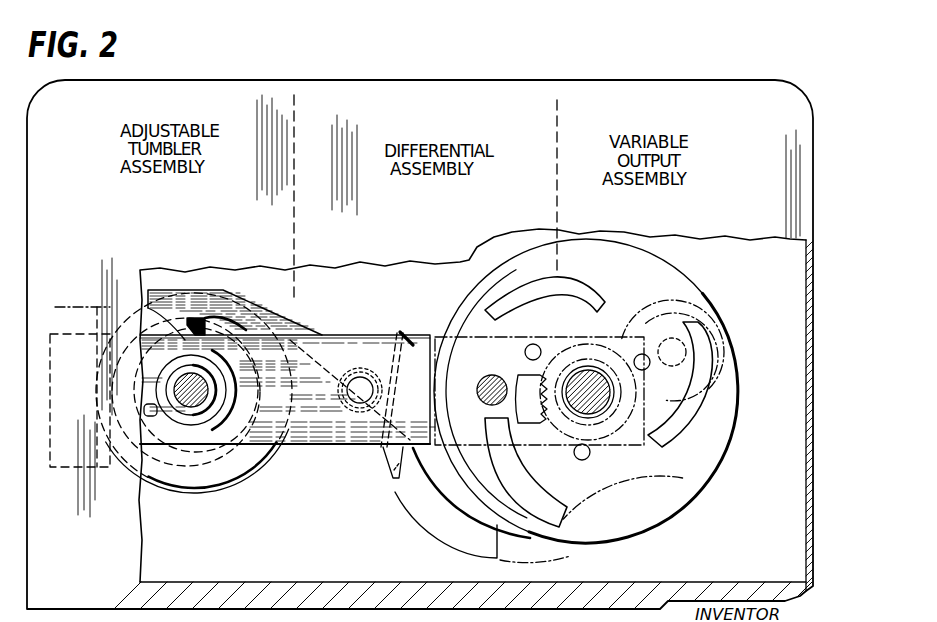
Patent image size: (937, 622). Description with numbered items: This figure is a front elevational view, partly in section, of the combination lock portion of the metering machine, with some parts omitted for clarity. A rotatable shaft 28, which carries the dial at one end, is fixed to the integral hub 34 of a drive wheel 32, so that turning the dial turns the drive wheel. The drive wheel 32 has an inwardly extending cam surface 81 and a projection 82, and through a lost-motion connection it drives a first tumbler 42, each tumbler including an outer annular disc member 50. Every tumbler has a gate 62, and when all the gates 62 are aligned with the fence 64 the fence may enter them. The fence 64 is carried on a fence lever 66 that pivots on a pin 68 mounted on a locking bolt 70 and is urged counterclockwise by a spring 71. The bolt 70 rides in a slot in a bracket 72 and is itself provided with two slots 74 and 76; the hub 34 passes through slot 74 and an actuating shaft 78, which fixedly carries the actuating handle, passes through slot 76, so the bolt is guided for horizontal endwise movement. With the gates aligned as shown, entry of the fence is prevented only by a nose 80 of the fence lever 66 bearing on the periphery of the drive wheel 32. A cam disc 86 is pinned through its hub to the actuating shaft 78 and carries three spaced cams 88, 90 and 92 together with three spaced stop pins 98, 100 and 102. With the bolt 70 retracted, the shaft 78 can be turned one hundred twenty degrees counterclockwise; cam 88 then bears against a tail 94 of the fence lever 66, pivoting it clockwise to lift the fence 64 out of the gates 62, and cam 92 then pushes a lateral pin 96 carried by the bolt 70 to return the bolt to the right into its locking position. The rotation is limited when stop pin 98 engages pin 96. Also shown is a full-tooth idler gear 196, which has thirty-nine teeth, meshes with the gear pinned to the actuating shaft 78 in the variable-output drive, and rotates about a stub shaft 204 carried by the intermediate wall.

The rotatable shaft 28 is at (222, 403).
The drive wheel 32 is at (227, 457).
The hub 34 is at (178, 425).
The first tumbler 42 is at (222, 481).
The outer annular disc member 50 is at (247, 471).
The gates 62 is at (203, 315).
The fence 64 is at (165, 300).
The fence lever 66 is at (299, 330).
The pin 68 is at (361, 383).
The locking bolt 70 is at (345, 447).
The spring 71 is at (405, 332).
The bracket 72 is at (72, 305).
The slot 74 is at (147, 430).
The slot 76 is at (520, 378).
The actuating shaft 78 is at (595, 404).
The nose 80 is at (204, 318).
The cam surface 81 is at (140, 346).
The projection 82 is at (243, 312).
The cam disc 86 is at (706, 488).
The cam 88 is at (548, 497).
The cam 90 is at (723, 474).
The cam 92 is at (583, 284).
The tail 94 is at (445, 520).
The lateral pin 96 is at (477, 389).
The stop pin 98 is at (647, 368).
The stop pin 100 is at (532, 344).
The stop pin 102 is at (575, 455).
The idler gear 196 is at (732, 363).
The stub shaft 204 is at (673, 350).